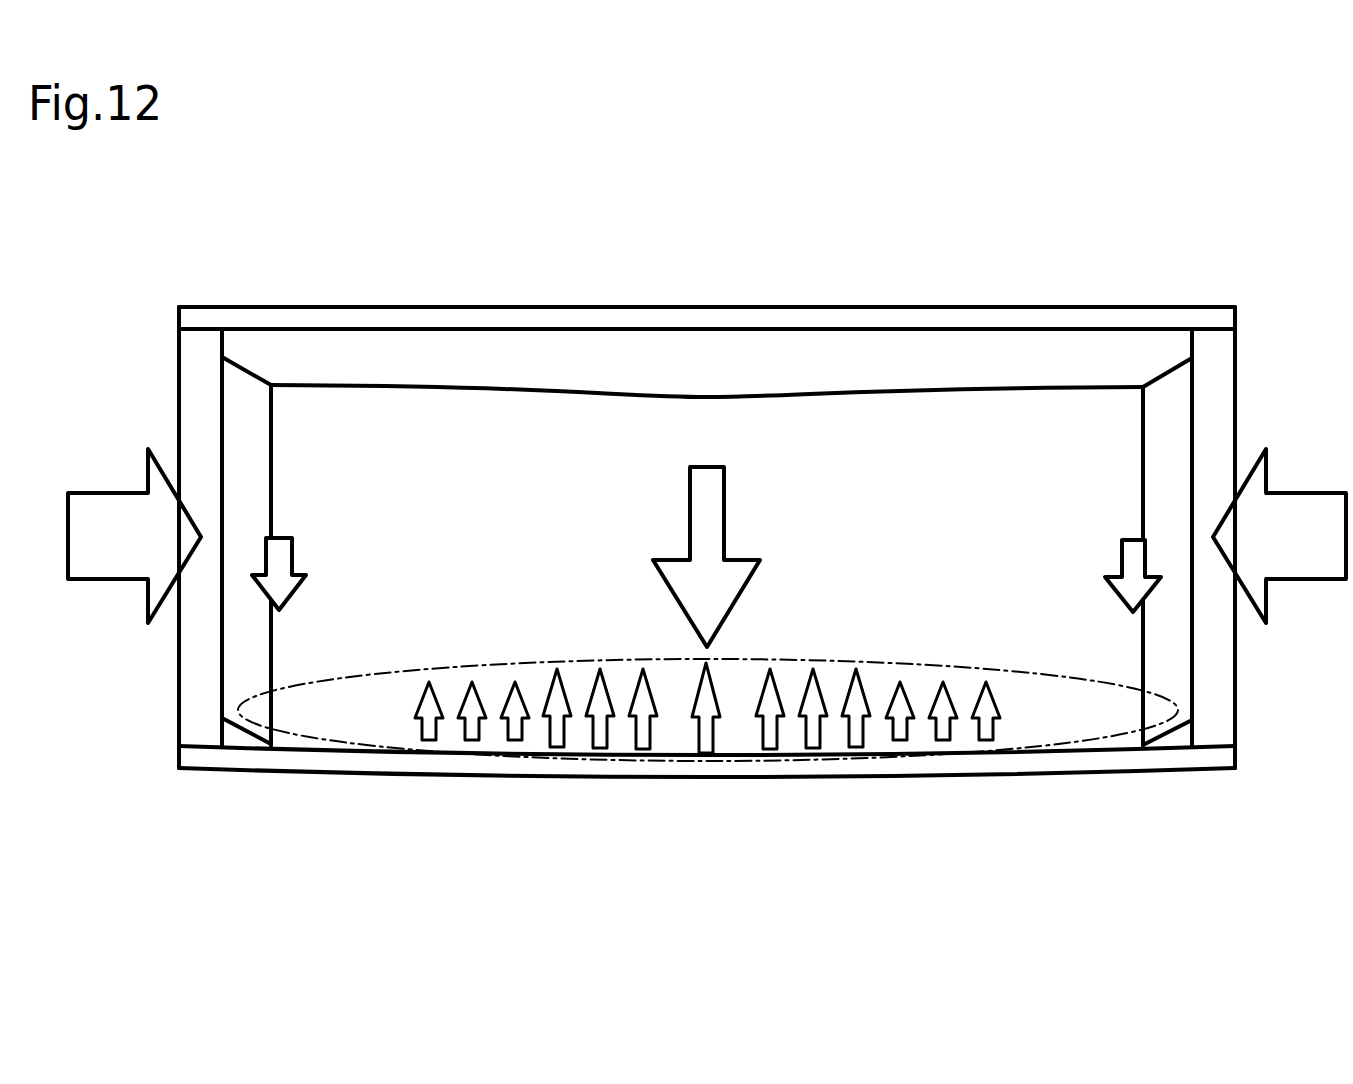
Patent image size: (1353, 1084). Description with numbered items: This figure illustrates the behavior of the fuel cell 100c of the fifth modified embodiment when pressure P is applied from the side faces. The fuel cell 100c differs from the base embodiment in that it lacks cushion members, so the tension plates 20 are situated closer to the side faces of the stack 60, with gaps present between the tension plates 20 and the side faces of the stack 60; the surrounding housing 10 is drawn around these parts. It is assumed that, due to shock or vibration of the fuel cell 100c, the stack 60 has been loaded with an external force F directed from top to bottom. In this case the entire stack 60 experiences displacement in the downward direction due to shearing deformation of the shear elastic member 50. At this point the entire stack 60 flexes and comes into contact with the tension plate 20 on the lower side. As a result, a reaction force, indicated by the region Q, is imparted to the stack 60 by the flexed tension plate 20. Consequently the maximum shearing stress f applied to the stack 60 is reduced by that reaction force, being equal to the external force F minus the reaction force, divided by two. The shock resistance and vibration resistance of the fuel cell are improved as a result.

The fuel cell 100c is at (842, 163).
The housing side wall 10 is at (187, 701).
The tension plate 20 is at (1107, 315).
The shear elastic member 50 is at (239, 683).
The stack 60 is at (648, 412).
The external pressure P is at (132, 553).
The external force F is at (716, 590).
The maximum shearing stress f is at (284, 586).
The deformation region Q is at (1003, 752).